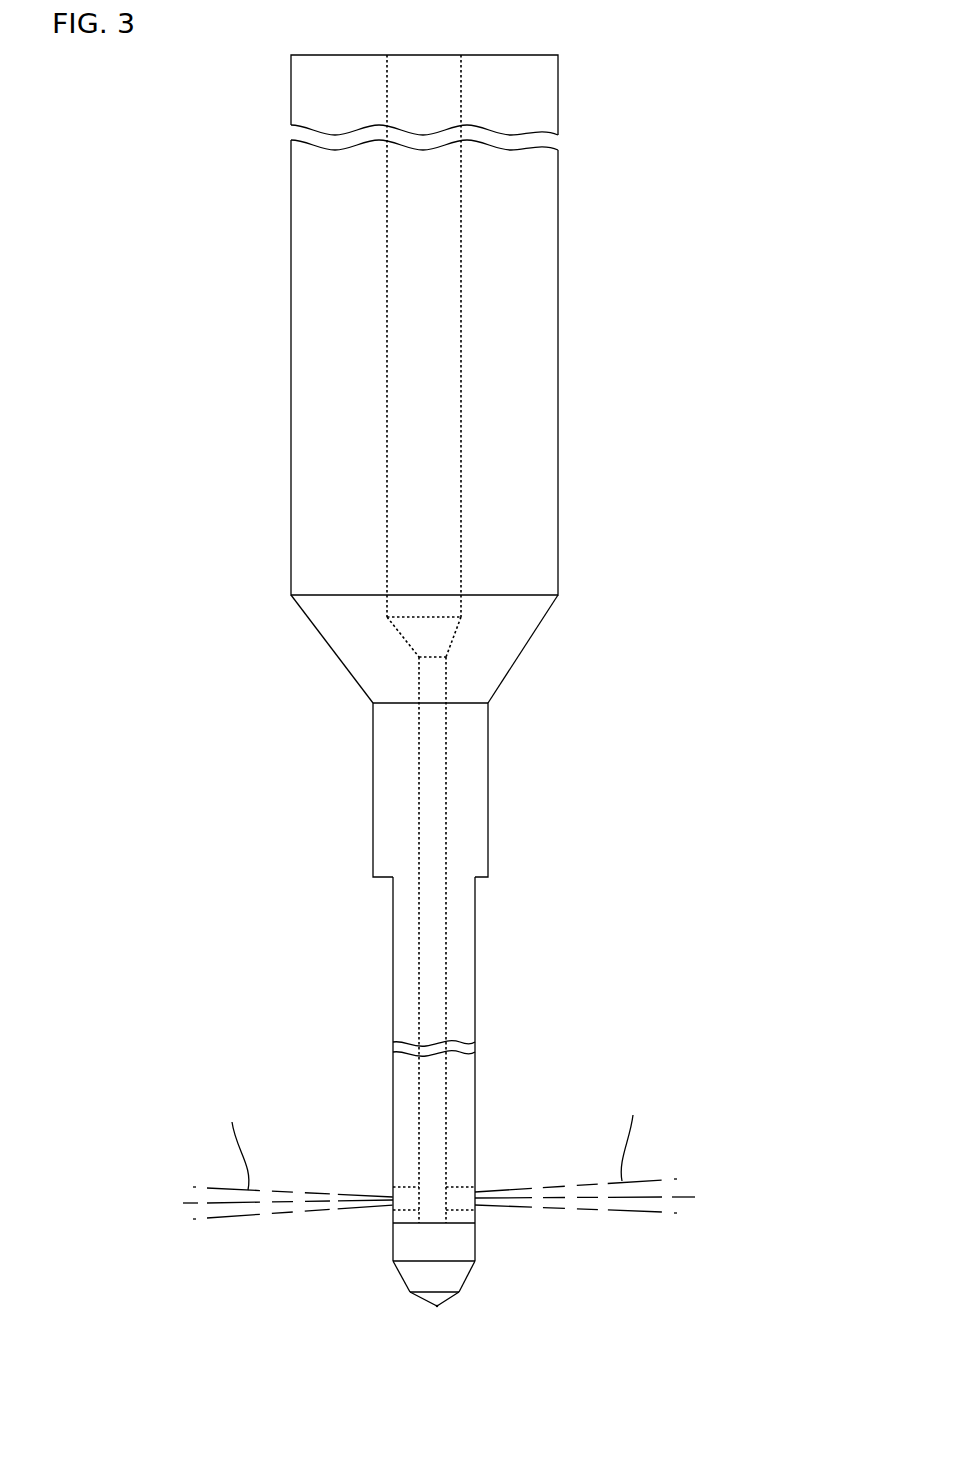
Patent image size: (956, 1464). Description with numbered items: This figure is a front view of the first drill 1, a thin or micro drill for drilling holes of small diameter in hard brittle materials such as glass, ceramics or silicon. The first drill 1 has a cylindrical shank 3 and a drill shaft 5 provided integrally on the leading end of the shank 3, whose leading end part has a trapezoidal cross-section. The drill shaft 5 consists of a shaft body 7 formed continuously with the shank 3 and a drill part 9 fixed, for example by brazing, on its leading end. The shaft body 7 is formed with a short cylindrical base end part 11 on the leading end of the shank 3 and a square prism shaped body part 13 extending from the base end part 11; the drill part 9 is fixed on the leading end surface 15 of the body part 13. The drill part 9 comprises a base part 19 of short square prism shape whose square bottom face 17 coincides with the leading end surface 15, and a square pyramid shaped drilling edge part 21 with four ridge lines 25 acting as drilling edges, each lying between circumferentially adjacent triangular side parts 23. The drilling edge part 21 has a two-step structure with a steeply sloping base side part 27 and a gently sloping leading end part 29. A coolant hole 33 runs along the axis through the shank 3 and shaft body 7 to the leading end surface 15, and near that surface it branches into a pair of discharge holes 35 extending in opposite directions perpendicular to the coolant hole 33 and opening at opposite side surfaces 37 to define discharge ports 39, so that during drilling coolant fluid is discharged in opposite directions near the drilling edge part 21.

The first drill 1 is at (168, 131).
The shank 3 is at (290, 295).
The drill shaft 5 is at (370, 1055).
The shaft body 7 is at (484, 918).
The drill part 9 is at (381, 1251).
The base end part 11 is at (402, 824).
The body part 13 is at (456, 992).
The leading end surface 15 is at (409, 1224).
The square bottom face 17 is at (476, 1214).
The base part 19 is at (445, 1243).
The drilling edge part 21 is at (402, 1291).
The triangular side parts 23 is at (424, 1283).
The ridge lines 25 is at (403, 1282).
The base side part 27 is at (450, 1270).
The leading end part 29 is at (440, 1305).
The coolant hole 33 is at (435, 323).
The discharge holes 35 is at (397, 1186).
The side surfaces 37 is at (393, 1103).
The discharge ports 39 is at (393, 1195).